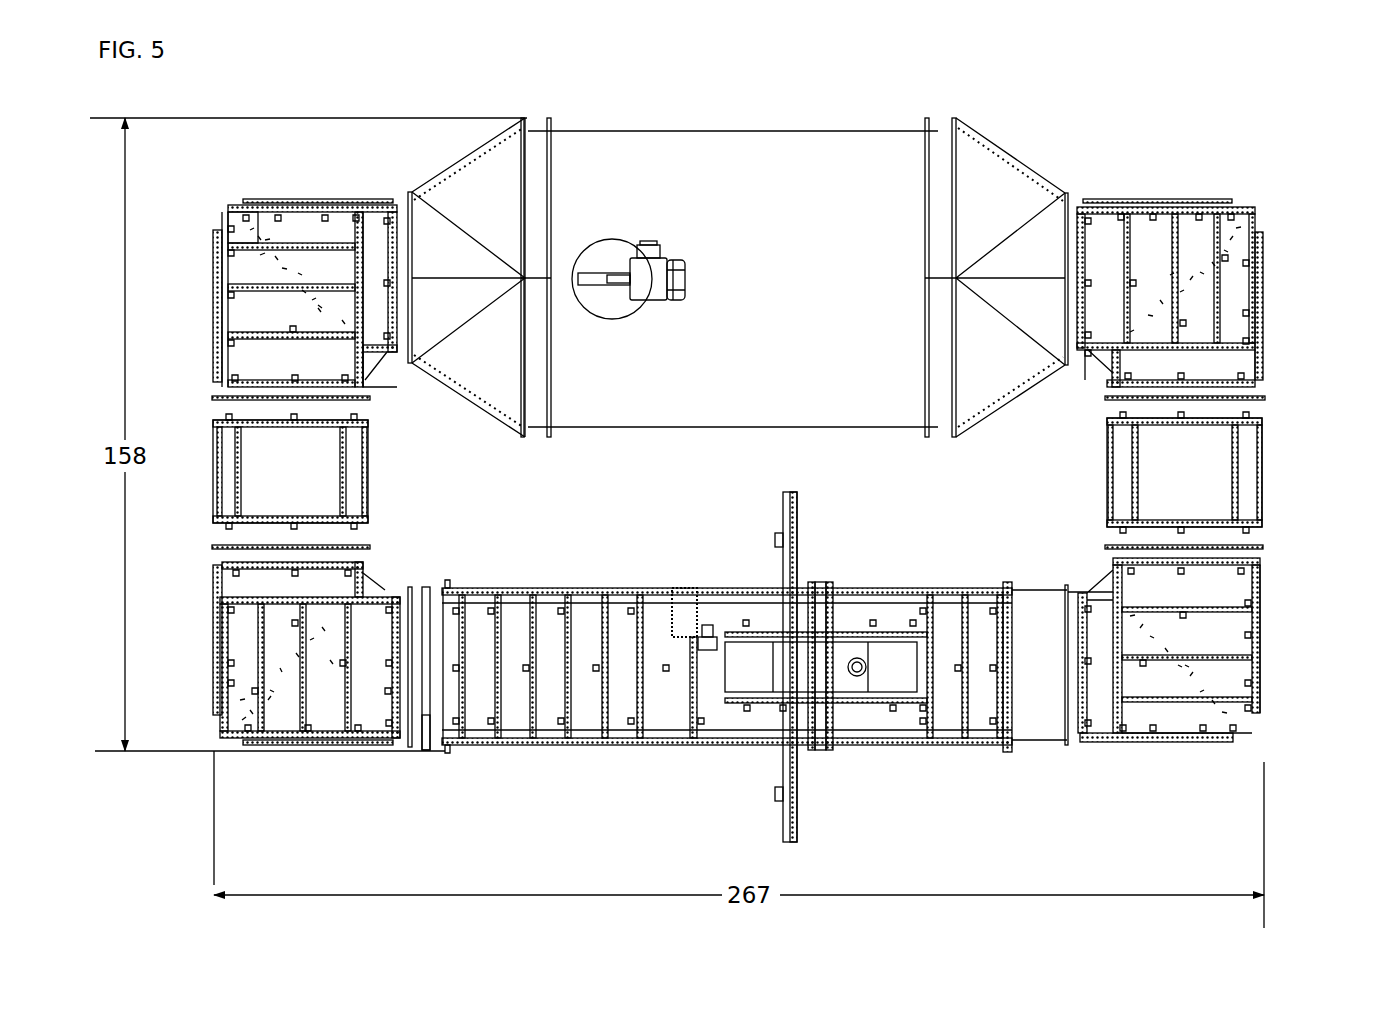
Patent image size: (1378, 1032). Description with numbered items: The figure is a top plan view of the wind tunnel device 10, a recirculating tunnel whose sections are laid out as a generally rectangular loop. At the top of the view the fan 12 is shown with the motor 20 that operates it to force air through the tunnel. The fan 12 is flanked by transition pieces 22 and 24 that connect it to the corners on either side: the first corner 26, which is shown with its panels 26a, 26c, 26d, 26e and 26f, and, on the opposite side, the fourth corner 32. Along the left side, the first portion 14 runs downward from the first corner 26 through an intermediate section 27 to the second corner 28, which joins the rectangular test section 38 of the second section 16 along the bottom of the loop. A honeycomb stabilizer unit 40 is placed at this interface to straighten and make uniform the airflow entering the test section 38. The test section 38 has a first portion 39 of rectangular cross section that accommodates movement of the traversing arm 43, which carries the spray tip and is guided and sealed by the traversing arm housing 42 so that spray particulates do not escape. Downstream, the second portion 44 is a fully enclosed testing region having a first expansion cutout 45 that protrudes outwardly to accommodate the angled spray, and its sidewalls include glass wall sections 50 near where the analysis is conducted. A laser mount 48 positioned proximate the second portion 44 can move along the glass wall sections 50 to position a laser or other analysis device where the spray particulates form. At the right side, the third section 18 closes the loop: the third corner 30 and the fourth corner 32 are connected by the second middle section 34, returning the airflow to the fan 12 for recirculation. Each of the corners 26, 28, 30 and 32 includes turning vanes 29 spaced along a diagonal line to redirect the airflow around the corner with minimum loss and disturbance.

The wind tunnel device 10 is at (1095, 101).
The fan 12 is at (699, 109).
The first portion 14 is at (190, 513).
The second section 16 is at (727, 690).
The third section 18 is at (1327, 410).
The motor 20 is at (672, 265).
The left transition section 22 is at (420, 188).
The right transition section 24 is at (1032, 173).
The first corner 26 is at (306, 306).
The module panel 26a is at (233, 223).
The top panel 26c is at (280, 200).
The side panel 26d is at (213, 293).
The lower panel 26e is at (387, 355).
The corner panel 26f is at (367, 380).
The middle left module 27 is at (217, 462).
The second corner 28 is at (215, 650).
The turning vanes 29 is at (283, 267).
The third corner 30 is at (1262, 667).
The fourth corner 32 is at (1263, 292).
The second middle section 34 is at (1262, 470).
The test section 38 is at (491, 747).
The first portion 39 is at (582, 747).
The honeycomb stabilizer unit 40 is at (431, 751).
The traversing arm housing 42 is at (703, 627).
The traversing arm 43 is at (710, 628).
The second portion 44 is at (859, 747).
The first expansion cutout 45 is at (888, 652).
The laser mount 48 is at (800, 832).
The glass wall sections 50 is at (1049, 747).